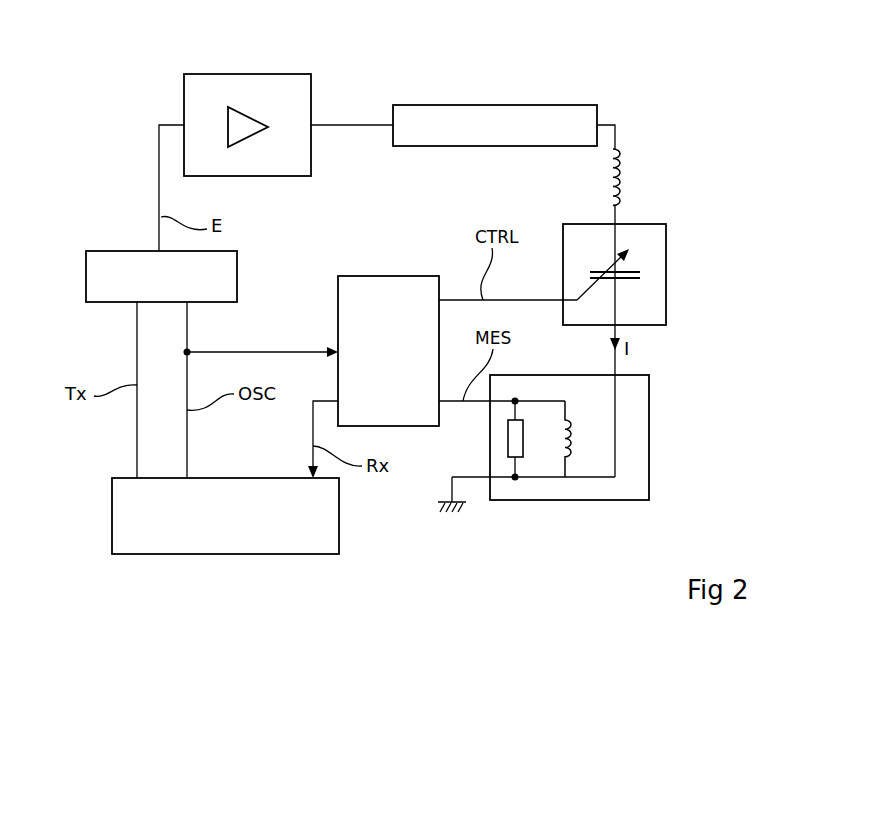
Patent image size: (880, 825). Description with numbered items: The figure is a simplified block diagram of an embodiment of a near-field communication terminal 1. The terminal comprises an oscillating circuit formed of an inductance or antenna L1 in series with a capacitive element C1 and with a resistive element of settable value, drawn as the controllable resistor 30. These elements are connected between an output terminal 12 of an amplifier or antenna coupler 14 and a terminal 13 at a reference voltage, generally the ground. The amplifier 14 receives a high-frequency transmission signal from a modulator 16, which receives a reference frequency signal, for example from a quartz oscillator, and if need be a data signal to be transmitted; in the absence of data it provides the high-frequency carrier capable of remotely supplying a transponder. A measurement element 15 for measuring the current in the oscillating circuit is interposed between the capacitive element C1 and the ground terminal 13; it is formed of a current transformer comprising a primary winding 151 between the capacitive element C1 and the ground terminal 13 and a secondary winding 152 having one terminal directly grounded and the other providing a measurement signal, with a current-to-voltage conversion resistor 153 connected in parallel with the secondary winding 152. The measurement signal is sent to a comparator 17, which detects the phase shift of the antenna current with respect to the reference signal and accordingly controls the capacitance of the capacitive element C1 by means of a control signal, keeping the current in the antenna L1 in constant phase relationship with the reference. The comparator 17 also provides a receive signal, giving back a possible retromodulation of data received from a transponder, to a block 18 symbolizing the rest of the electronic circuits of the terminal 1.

The terminal 1 is at (275, 652).
The output terminal 12 is at (353, 123).
The terminal at a reference voltage 13 is at (452, 491).
The amplifier 14 is at (222, 74).
The measurement element 15 is at (578, 437).
The modulator 16 is at (237, 276).
The comparator 17 is at (387, 276).
The block symbolizing the rest of the electronic circuits 18 is at (203, 554).
The controllable resistor R1 30 is at (549, 105).
The primary winding 151 is at (614, 427).
The secondary winding 152 is at (569, 432).
The current-to-voltage conversion resistor 153 is at (523, 440).
The antenna L1 is at (633, 177).
The capacitive element C1 is at (614, 299).